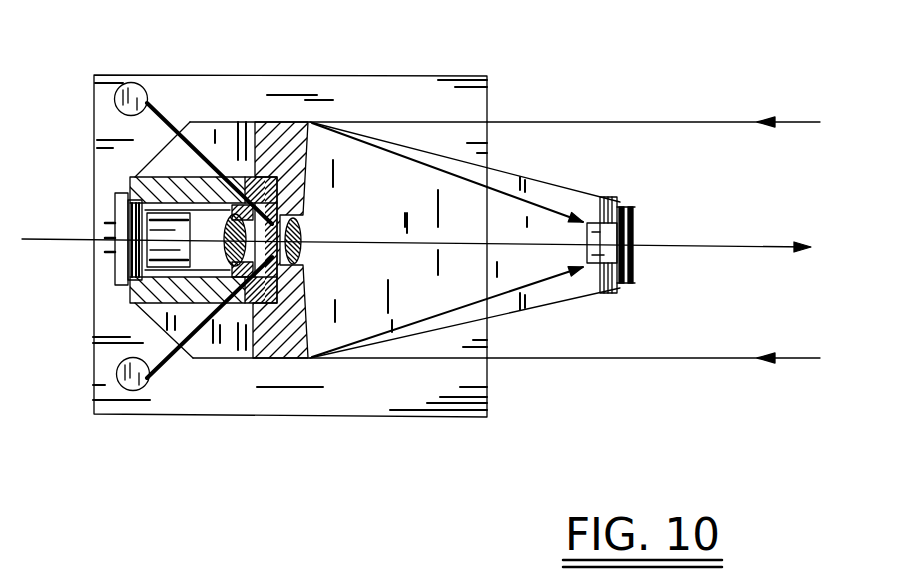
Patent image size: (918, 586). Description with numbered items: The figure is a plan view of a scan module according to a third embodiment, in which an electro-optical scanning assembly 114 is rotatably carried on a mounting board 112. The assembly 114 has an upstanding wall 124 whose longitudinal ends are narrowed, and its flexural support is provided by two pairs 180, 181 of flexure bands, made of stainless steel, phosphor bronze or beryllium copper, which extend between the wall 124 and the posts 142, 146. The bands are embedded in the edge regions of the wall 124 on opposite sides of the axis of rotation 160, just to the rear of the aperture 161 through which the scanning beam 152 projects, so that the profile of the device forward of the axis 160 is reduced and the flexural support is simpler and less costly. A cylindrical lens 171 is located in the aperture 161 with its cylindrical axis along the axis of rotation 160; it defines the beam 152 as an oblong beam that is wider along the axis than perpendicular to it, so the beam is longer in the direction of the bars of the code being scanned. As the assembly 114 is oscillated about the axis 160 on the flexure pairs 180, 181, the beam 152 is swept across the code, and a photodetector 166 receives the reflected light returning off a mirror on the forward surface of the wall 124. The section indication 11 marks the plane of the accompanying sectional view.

The section line 11- 11 is at (43, 285).
The mounting board 112 is at (478, 418).
The electro-optical scanning assembly 114 is at (540, 181).
The upstanding wall 124 is at (290, 358).
The post 142 is at (142, 75).
The post 146 is at (130, 392).
The scanning beam 152 is at (737, 247).
The axis of rotation 160 is at (303, 244).
The aperture 161 is at (316, 202).
The photodetector 166 is at (597, 262).
The cylindrical lens 171 is at (306, 262).
The pair of flexure bands 180 is at (162, 122).
The pair of flexure bands 181 is at (171, 358).